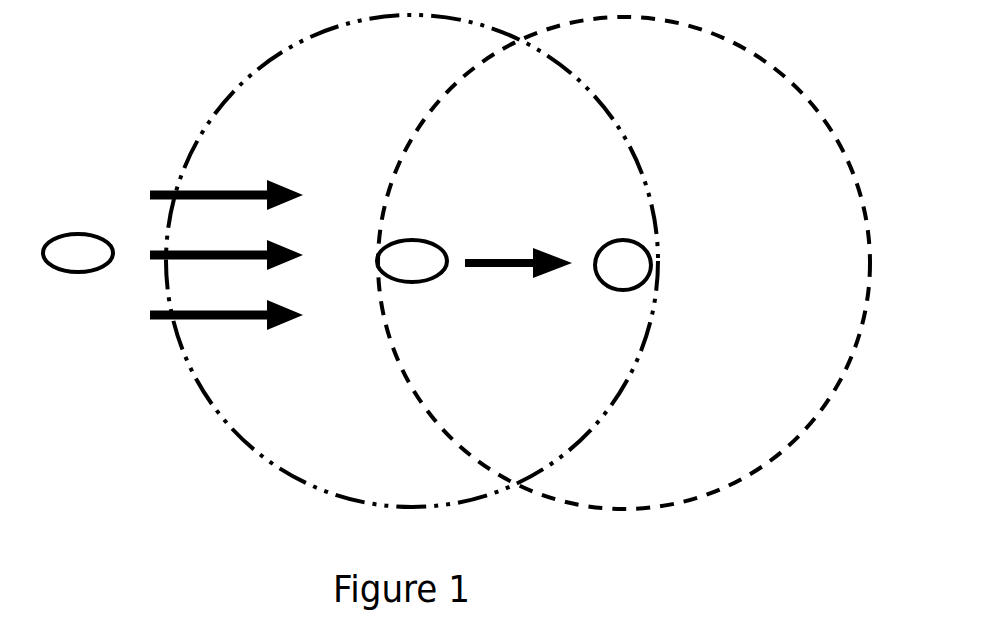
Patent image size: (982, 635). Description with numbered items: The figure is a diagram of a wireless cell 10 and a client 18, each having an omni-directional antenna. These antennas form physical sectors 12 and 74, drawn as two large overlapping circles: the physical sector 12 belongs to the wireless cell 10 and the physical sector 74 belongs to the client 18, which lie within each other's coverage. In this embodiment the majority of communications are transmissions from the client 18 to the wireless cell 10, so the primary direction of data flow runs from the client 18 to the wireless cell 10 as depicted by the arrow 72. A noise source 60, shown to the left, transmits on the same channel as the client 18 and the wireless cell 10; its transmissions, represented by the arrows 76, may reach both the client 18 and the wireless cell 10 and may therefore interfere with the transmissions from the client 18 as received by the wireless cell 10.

The wireless cell 10 is at (639, 276).
The physical sector 12 is at (773, 64).
The client 18 is at (427, 272).
The noise source 60 is at (94, 266).
The arrow 72 is at (503, 257).
The physical sector 74 is at (287, 46).
The arrows 76 is at (118, 175).